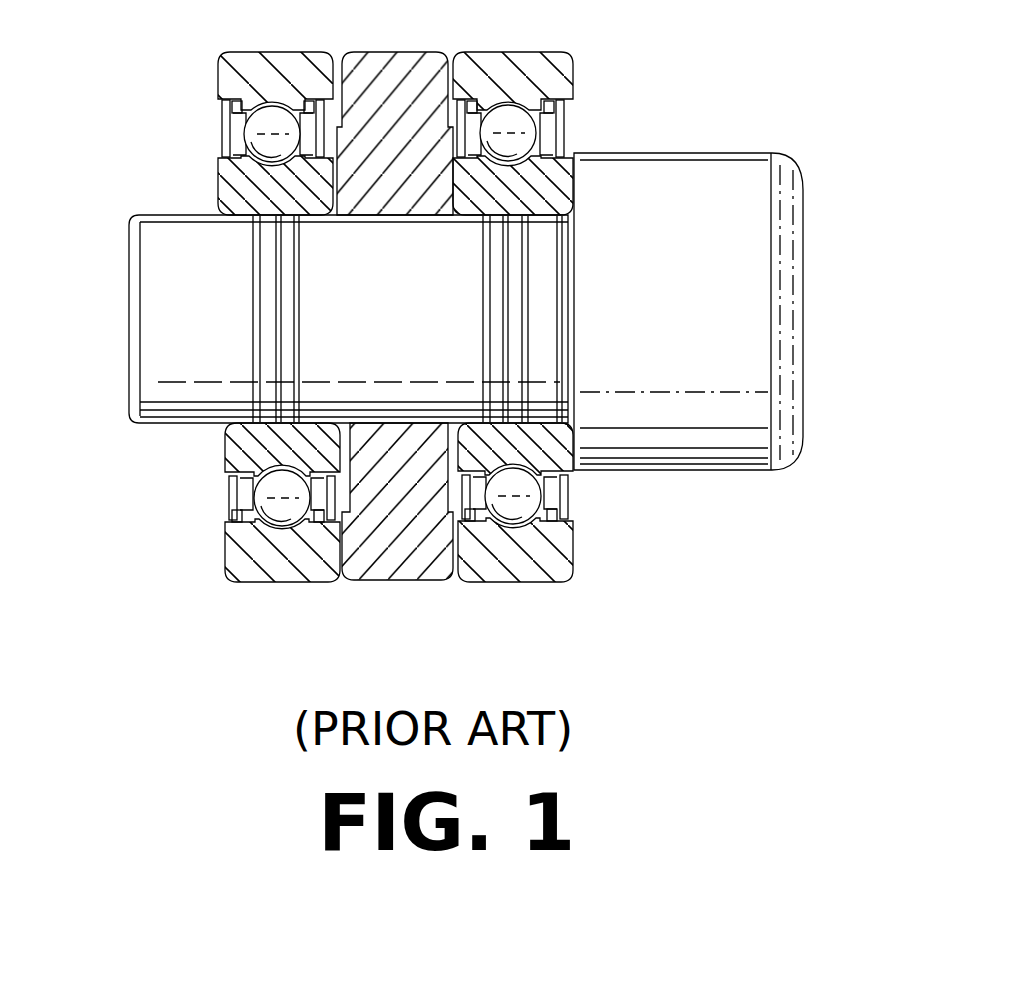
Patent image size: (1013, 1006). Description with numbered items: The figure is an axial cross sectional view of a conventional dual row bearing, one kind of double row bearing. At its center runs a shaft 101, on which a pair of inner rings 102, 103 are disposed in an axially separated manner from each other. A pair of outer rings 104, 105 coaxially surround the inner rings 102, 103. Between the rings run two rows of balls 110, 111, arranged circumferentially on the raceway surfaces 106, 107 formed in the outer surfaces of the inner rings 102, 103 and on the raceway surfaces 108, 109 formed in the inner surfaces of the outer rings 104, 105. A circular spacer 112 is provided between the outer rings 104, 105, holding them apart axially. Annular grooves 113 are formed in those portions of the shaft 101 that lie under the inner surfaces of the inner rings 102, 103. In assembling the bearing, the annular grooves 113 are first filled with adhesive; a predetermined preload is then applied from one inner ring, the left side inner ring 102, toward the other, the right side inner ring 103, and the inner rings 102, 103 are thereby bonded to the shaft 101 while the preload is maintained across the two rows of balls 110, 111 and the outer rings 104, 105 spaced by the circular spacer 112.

The shaft 101 is at (432, 314).
The inner ring 102 is at (255, 447).
The inner ring 103 is at (537, 447).
The outer ring 104 is at (235, 76).
The outer ring 105 is at (537, 72).
The raceway surface 106 is at (240, 145).
The raceway surface 107 is at (530, 128).
The raceway surface 108 is at (262, 546).
The raceway surface 109 is at (517, 505).
The balls 110 is at (238, 96).
The balls 111 is at (548, 84).
The circular spacer 112 is at (397, 530).
The annular grooves 113 is at (262, 290).